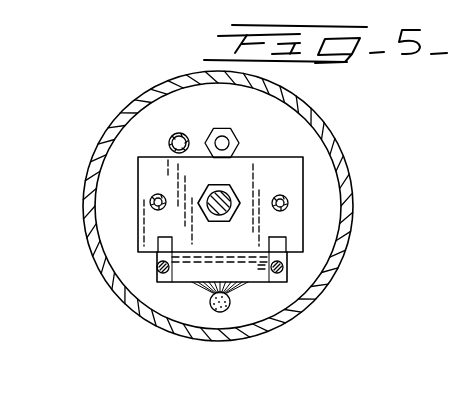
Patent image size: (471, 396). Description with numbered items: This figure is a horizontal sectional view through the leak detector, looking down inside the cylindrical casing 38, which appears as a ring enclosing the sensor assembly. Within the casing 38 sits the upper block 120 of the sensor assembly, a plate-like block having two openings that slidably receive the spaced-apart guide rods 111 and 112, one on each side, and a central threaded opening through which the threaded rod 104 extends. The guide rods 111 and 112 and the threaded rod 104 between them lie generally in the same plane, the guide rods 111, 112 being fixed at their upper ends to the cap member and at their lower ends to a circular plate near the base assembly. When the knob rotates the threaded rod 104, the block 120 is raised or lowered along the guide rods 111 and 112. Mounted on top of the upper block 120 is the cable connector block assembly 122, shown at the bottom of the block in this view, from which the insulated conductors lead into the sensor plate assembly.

The cylindrical casing 38 is at (146, 94).
The threaded rod 104 is at (232, 200).
The guide rod 111 is at (150, 201).
The guide rod 112 is at (286, 206).
The upper block 120 is at (303, 188).
The cable connector block assembly 122 is at (192, 272).